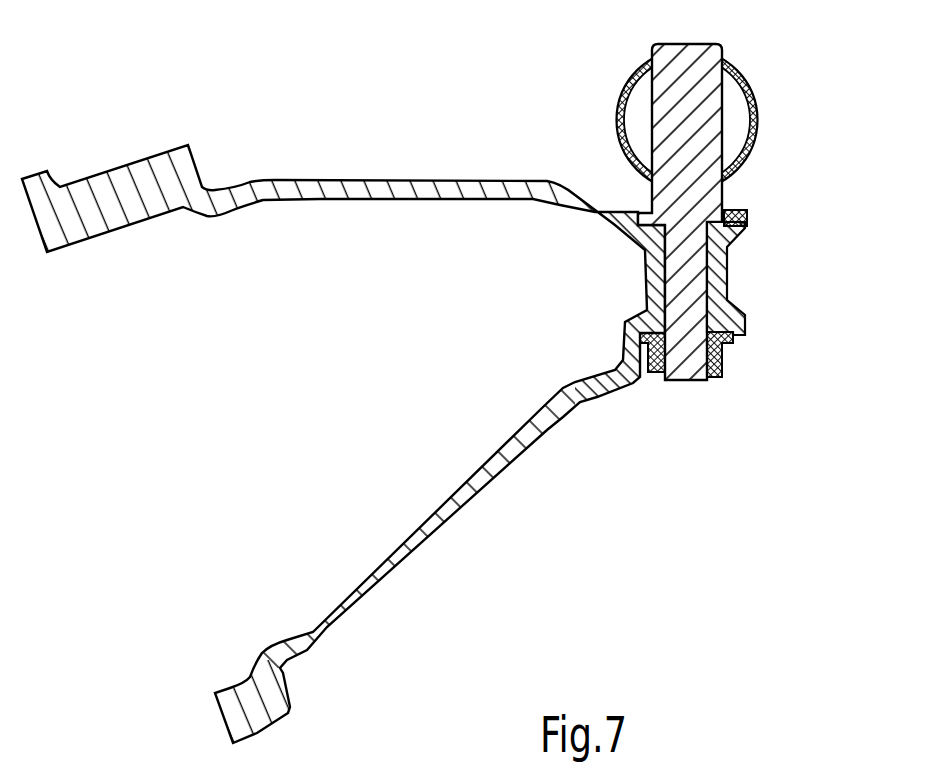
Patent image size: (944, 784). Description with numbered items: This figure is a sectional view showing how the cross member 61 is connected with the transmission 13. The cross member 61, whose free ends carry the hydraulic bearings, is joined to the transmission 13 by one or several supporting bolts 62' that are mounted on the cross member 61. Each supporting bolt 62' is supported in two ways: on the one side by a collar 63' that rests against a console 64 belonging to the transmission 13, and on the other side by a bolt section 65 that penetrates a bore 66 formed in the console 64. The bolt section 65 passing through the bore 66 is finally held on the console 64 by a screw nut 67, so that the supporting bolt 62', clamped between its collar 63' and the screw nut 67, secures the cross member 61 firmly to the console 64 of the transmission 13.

The transmission 13 is at (335, 440).
The cross member 61 is at (747, 92).
The supporting bolt 62' is at (637, 212).
The collar 63' is at (767, 185).
The console 64 is at (727, 222).
The bolt section 65 is at (674, 212).
The bore 66 is at (647, 295).
The screw nut 67 is at (717, 358).